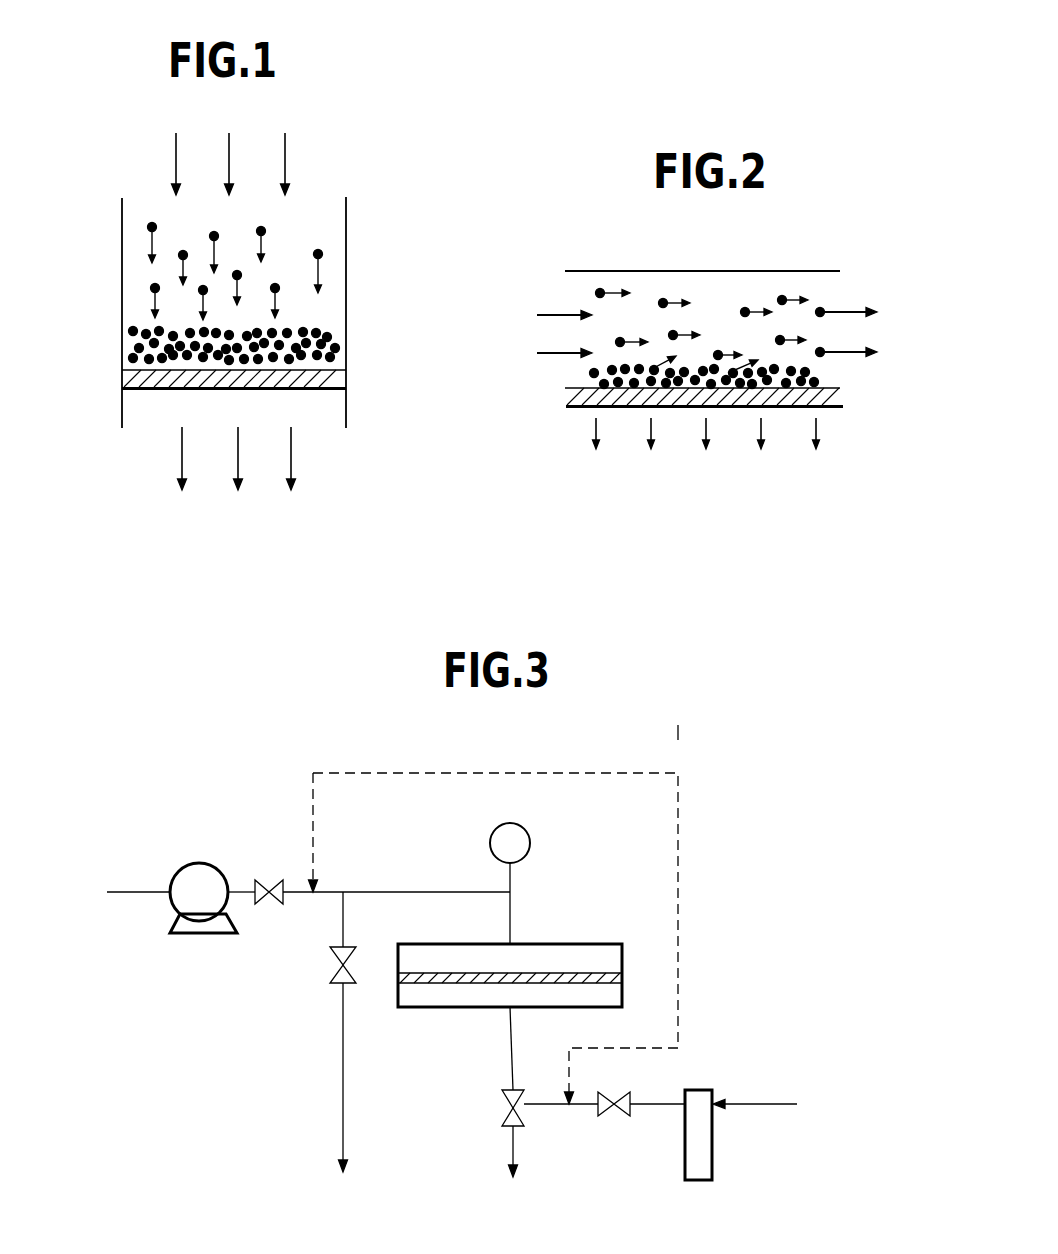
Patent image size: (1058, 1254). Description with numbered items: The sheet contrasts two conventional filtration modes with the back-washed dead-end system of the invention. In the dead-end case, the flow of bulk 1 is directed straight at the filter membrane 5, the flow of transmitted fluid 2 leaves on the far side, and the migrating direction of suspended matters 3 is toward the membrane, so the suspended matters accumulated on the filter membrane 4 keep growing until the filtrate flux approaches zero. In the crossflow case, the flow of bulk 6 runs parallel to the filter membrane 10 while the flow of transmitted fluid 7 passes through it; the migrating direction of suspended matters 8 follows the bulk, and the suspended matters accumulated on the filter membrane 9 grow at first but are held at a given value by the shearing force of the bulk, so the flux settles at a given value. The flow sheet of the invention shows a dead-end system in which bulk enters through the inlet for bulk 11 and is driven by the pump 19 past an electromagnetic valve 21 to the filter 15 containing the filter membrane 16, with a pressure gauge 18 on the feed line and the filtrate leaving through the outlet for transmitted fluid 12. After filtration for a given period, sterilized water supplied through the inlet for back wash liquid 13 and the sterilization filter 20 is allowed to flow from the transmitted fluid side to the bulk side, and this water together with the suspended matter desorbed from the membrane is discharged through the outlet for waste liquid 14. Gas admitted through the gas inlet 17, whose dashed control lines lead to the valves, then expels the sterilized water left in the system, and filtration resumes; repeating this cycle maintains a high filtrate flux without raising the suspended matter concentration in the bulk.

In FIG. 1, the flow of bulk in dead-end type filtration 1 is at (287, 165).
In FIG. 1, the flow of transmitted fluid in dead-end type filtration 2 is at (293, 474).
In FIG. 1, the migrating direction of suspended matters in dead-end type filtration 3 is at (322, 254).
In FIG. 1, the suspended matters accumulated on filter membrane 4 is at (343, 352).
In FIG. 1, the filter membrane 5 is at (322, 378).
In FIG. 2, the flow of bulk in crossflow type filtration 6 is at (537, 314).
In FIG. 2, the flow of transmitted fluid in crossflow type filtration 7 is at (596, 446).
In FIG. 2, the migrating direction of suspended matters in crossflow type filtration 8 is at (663, 300).
In FIG. 2, the suspended matters accumulated on filter membrane 9 is at (818, 380).
In FIG. 2, the filter membrane 10 is at (835, 400).
In FIG. 3, the inlet for bulk 11 is at (107, 892).
In FIG. 3, the outlet for transmitted fluid 12 is at (511, 1179).
In FIG. 3, the inlet for back wash liquid 13 is at (797, 1104).
In FIG. 3, the outlet for waste liquid 14 is at (341, 1174).
In FIG. 3, the filter 15 is at (557, 944).
In FIG. 3, the filter membrane 16 is at (622, 980).
In FIG. 3, the gas inlet 17 is at (680, 725).
In FIG. 3, the pressure gauge 18 is at (527, 860).
In FIG. 3, the pump 19 is at (218, 866).
In FIG. 3, the sterilization filter 20 is at (712, 1165).
In FIG. 3, the electromagnetic valve 21 is at (270, 881).